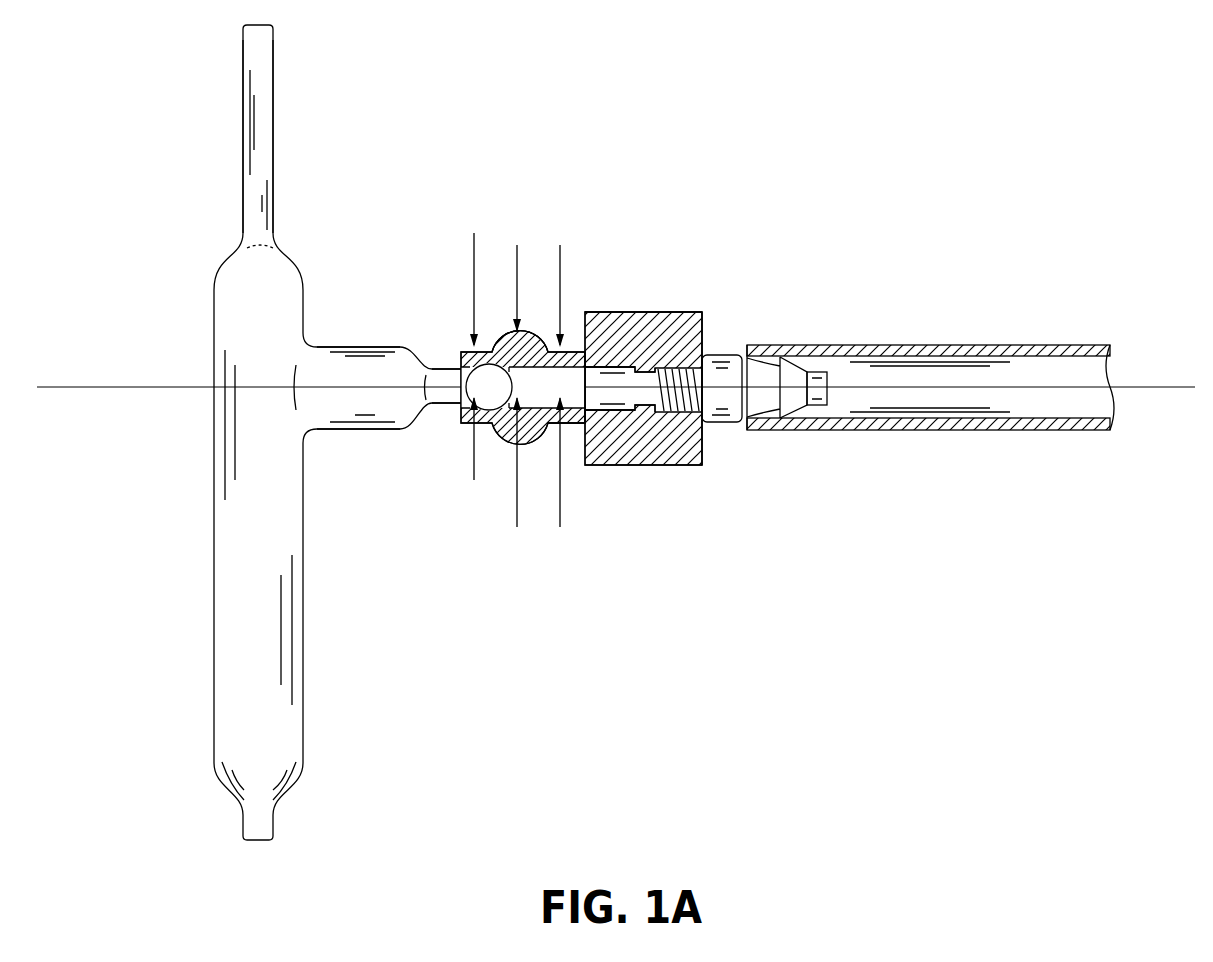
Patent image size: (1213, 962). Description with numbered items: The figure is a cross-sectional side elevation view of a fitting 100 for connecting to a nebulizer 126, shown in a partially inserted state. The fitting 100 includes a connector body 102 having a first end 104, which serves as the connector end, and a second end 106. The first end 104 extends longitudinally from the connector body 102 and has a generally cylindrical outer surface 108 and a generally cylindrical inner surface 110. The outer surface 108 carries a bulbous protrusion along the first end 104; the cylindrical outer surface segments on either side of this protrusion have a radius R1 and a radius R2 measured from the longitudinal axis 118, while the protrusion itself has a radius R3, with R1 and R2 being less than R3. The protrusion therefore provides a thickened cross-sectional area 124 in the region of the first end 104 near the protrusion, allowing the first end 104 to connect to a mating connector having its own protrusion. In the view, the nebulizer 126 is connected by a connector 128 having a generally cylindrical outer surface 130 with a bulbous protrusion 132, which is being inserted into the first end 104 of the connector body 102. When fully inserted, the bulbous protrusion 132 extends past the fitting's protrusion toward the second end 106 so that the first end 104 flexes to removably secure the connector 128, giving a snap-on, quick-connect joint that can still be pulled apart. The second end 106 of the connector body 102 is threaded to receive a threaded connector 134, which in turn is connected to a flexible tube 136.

The fitting 100 is at (708, 305).
The connector body 102 is at (692, 470).
The first end 104 is at (508, 446).
The second end 106 is at (632, 312).
The generally cylindrical outer surface 108 is at (563, 425).
The generally cylindrical inner surface 110 is at (590, 378).
The longitudinal axis 118 is at (67, 387).
The thickened cross-sectional area 124 is at (510, 350).
The nebulizer 126 is at (288, 130).
The connector 128 is at (355, 347).
The generally cylindrical outer surface 130 is at (447, 406).
The bulbous protrusion 132 is at (467, 377).
The threaded connector 134 is at (744, 340).
The flexible tube 136 is at (932, 342).
The radius of first cylindrical outer surface segment R1 is at (558, 372).
The radius of second cylindrical outer surface segment R2 is at (471, 342).
The radius of bulbous protrusion R3 is at (513, 403).